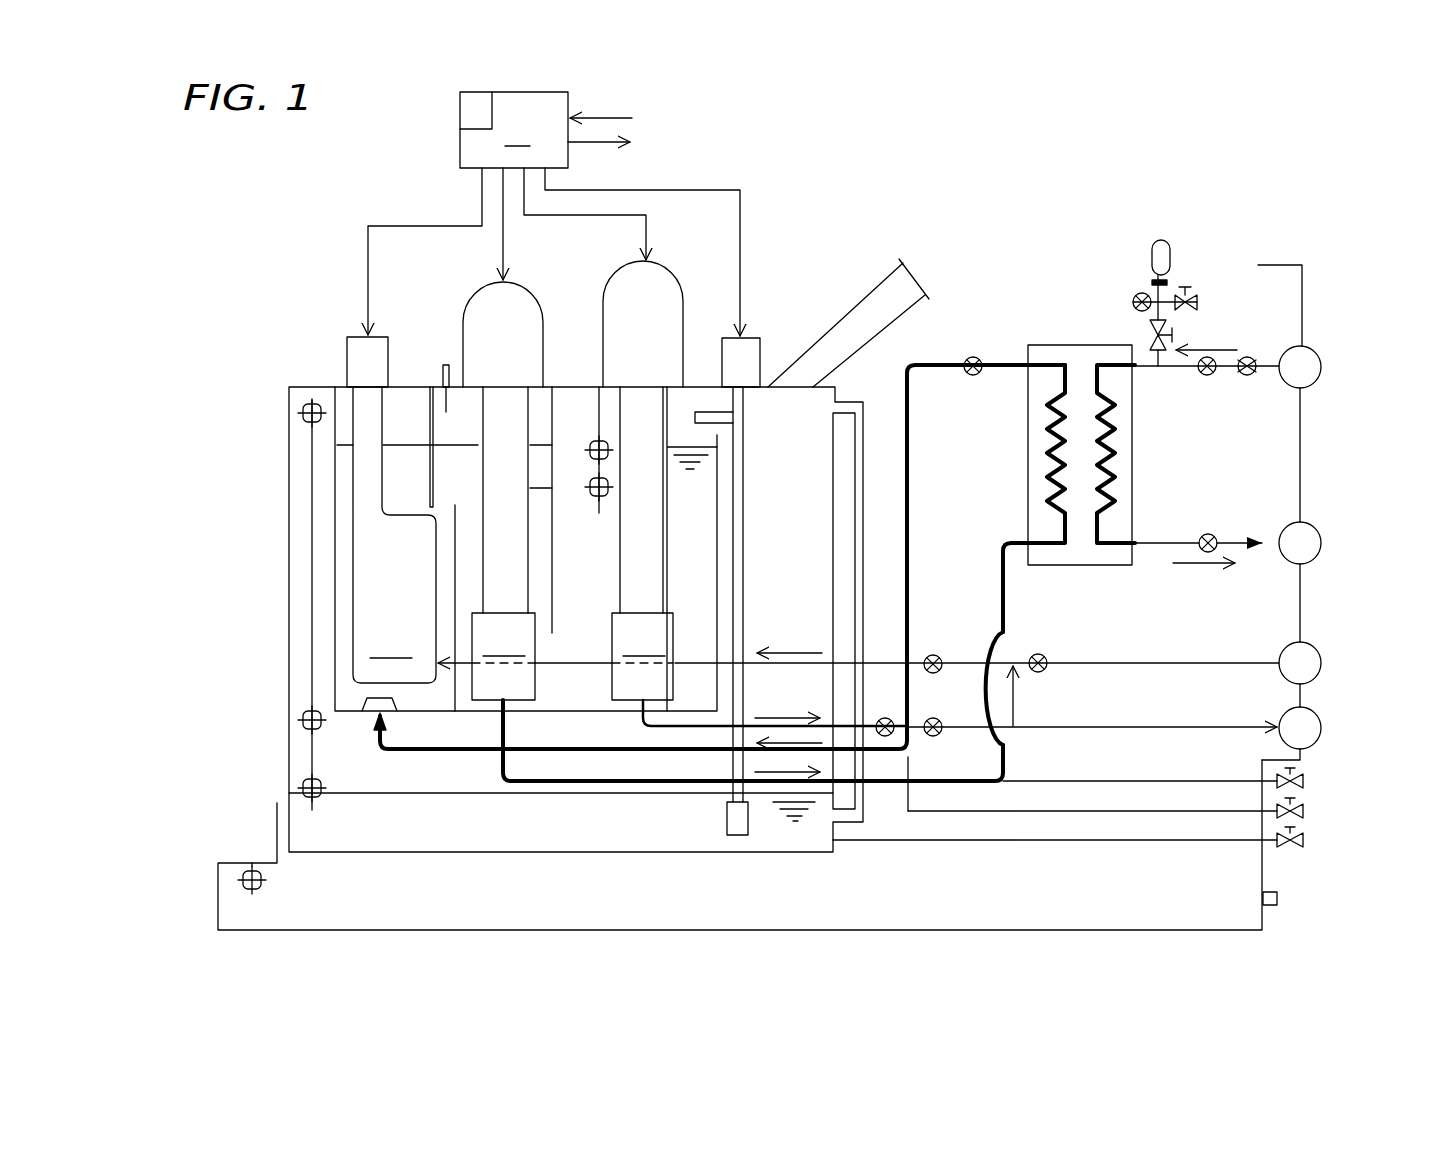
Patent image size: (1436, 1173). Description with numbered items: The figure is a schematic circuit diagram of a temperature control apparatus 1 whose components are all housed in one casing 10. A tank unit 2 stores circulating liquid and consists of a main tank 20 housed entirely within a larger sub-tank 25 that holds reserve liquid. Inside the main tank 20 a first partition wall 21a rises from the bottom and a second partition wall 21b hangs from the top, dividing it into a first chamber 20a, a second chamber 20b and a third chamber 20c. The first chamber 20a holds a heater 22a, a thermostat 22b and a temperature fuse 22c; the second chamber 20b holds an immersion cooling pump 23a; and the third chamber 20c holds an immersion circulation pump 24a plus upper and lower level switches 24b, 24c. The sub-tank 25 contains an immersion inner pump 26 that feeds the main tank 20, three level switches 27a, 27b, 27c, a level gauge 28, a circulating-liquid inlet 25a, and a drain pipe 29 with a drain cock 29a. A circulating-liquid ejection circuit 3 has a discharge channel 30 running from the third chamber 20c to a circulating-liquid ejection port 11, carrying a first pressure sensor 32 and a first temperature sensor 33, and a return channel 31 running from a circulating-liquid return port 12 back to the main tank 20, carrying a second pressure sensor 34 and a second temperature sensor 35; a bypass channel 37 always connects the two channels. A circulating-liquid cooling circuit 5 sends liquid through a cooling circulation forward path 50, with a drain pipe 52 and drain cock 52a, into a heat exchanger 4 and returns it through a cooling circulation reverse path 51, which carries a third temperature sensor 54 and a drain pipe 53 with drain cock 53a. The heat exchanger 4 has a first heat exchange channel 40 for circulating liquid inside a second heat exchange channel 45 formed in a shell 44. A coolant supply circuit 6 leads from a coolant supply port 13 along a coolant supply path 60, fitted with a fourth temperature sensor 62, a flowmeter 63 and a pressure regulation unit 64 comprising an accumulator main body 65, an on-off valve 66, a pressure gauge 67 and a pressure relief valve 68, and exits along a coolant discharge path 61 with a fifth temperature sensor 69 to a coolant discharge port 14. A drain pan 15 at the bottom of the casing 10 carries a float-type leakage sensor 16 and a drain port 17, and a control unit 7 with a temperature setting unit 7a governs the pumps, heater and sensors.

The temperature control apparatus 1 is at (1014, 128).
The tank unit 2 is at (246, 484).
The circulating-liquid ejection circuit 3 is at (1119, 758).
The heat exchanger 4 is at (1042, 325).
The circulating-liquid cooling circuit 5 is at (917, 471).
The coolant supply circuit 6 is at (1213, 338).
The control unit 7 is at (546, 130).
The temperature setting unit 7a is at (462, 108).
The casing 10 is at (1310, 279).
The circulating-liquid ejection port 11 is at (1321, 730).
The circulating-liquid return port 12 is at (1321, 663).
The coolant supply port 13 is at (1321, 367).
The coolant discharge port 14 is at (1321, 543).
The drain pan 15 is at (1213, 930).
The float-type leakage sensor 16 is at (247, 873).
The drain port 17 is at (1280, 898).
The main tank 20 is at (545, 711).
The first chamber 20a is at (342, 652).
The second chamber 20b is at (452, 563).
The third chamber 20c is at (690, 492).
The first partition wall 21a is at (437, 527).
The second partition wall 21b is at (473, 540).
The heater 22a is at (394, 549).
The thermostat 22b is at (383, 475).
The temperature fuse 22c is at (437, 405).
The immersion cooling pump 23a is at (503, 543).
The immersion circulation pump 24a is at (643, 480).
The upper level switch 24b is at (590, 440).
The lower level switch 24c is at (592, 495).
The sub-tank 25 is at (620, 855).
The circulating-liquid inlet 25a is at (868, 310).
The immersion inner pump 26 is at (737, 820).
The level switch 27a is at (303, 402).
The level switch 27b is at (298, 718).
The level switch 27c is at (298, 786).
The level gauge 28 is at (858, 470).
The drain pipe 29 is at (990, 841).
The drain cock 29a is at (1304, 841).
The discharge channel 30 is at (1160, 730).
The return channel 31 is at (1210, 660).
The first pressure sensor 32 is at (885, 717).
The first temperature sensor 33 is at (936, 735).
The second pressure sensor 34 is at (933, 654).
The second temperature sensor 35 is at (1040, 653).
The bypass channel 37 is at (1013, 693).
The first heat exchange channel 40 is at (1045, 444).
The shell 44 is at (1085, 345).
The second heat exchange channel 45 is at (1114, 490).
The cooling circulation forward path 50 is at (880, 785).
The cooling circulation reverse path 51 is at (940, 365).
The drain pipe 52 is at (1060, 783).
The drain cock 52a is at (1304, 781).
The drain pipe 53 is at (1185, 812).
The drain cock 53a is at (1304, 811).
The third temperature sensor 54 is at (973, 356).
The coolant supply path 60 is at (1177, 370).
The coolant discharge path 61 is at (1160, 540).
The fourth temperature sensor 62 is at (1210, 376).
The flowmeter 63 is at (1247, 357).
The pressure regulation unit 64 is at (1157, 229).
The accumulator main body 65 is at (1153, 250).
The on-off valve 66 is at (1152, 372).
The pressure gauge 67 is at (1134, 300).
The pressure relief valve 68 is at (1193, 291).
The fifth temperature sensor 69 is at (1212, 534).